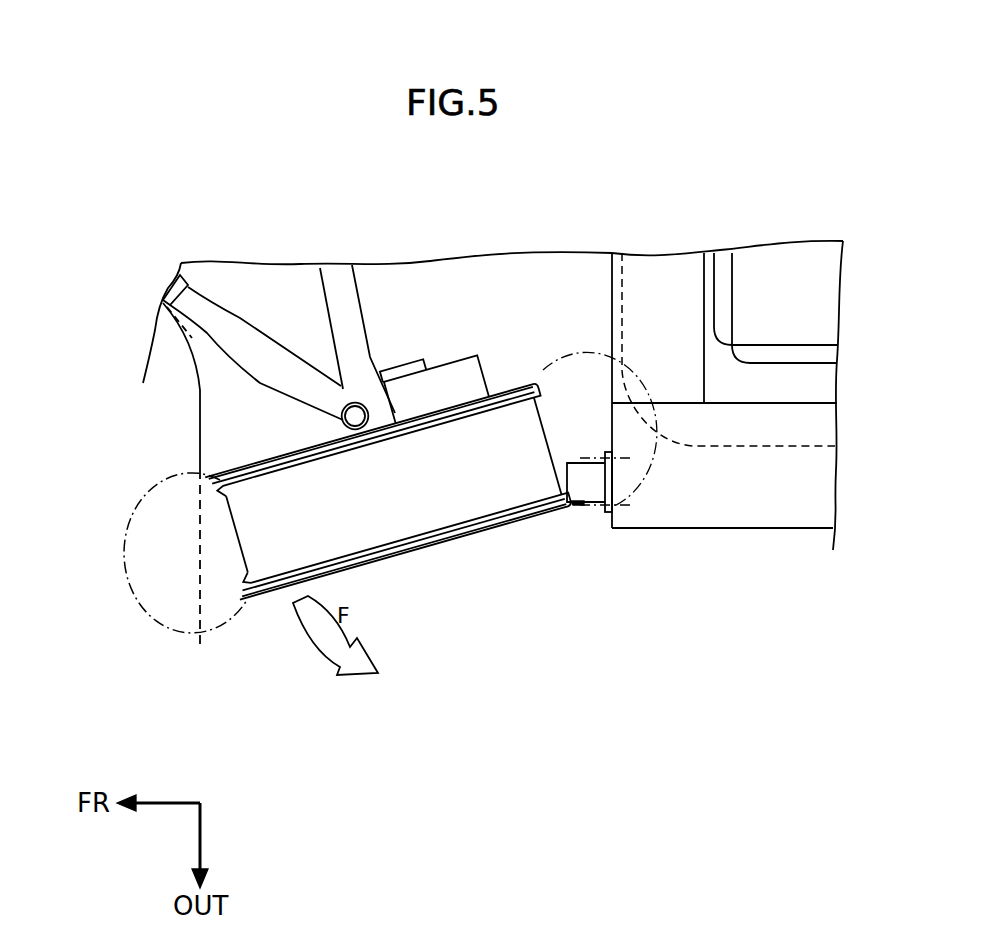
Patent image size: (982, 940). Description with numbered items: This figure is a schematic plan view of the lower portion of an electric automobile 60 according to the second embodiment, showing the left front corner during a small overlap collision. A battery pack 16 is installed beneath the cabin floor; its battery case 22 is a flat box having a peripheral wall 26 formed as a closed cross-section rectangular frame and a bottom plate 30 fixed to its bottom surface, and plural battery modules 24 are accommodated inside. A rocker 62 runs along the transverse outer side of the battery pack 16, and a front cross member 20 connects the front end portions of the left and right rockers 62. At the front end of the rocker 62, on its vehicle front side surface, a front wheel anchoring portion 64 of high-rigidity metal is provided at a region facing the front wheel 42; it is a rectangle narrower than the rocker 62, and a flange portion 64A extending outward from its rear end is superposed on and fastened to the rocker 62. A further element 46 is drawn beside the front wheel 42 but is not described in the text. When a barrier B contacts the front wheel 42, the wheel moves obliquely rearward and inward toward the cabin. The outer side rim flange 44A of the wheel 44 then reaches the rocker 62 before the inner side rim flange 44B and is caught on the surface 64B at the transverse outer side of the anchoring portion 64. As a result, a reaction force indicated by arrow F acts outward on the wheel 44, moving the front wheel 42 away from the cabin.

The battery pack 16 is at (725, 245).
The front cross member 20 is at (608, 285).
The battery case 22 is at (780, 448).
The battery module 24 is at (760, 256).
The peripheral wall 26 is at (700, 286).
The bottom plate 30 is at (657, 270).
The front wheel 42 is at (379, 505).
The wheel 44 is at (379, 474).
The outer side rim flange 44A is at (416, 562).
The inner side rim flange 44B is at (505, 383).
The seat member region 46 is at (120, 493).
The electric automobile 60 is at (573, 620).
The rocker 62 is at (752, 530).
The front wheel anchoring portion 64 is at (590, 506).
The flange portion 64A is at (600, 493).
The surface 64B is at (575, 504).
The barrier B is at (203, 637).